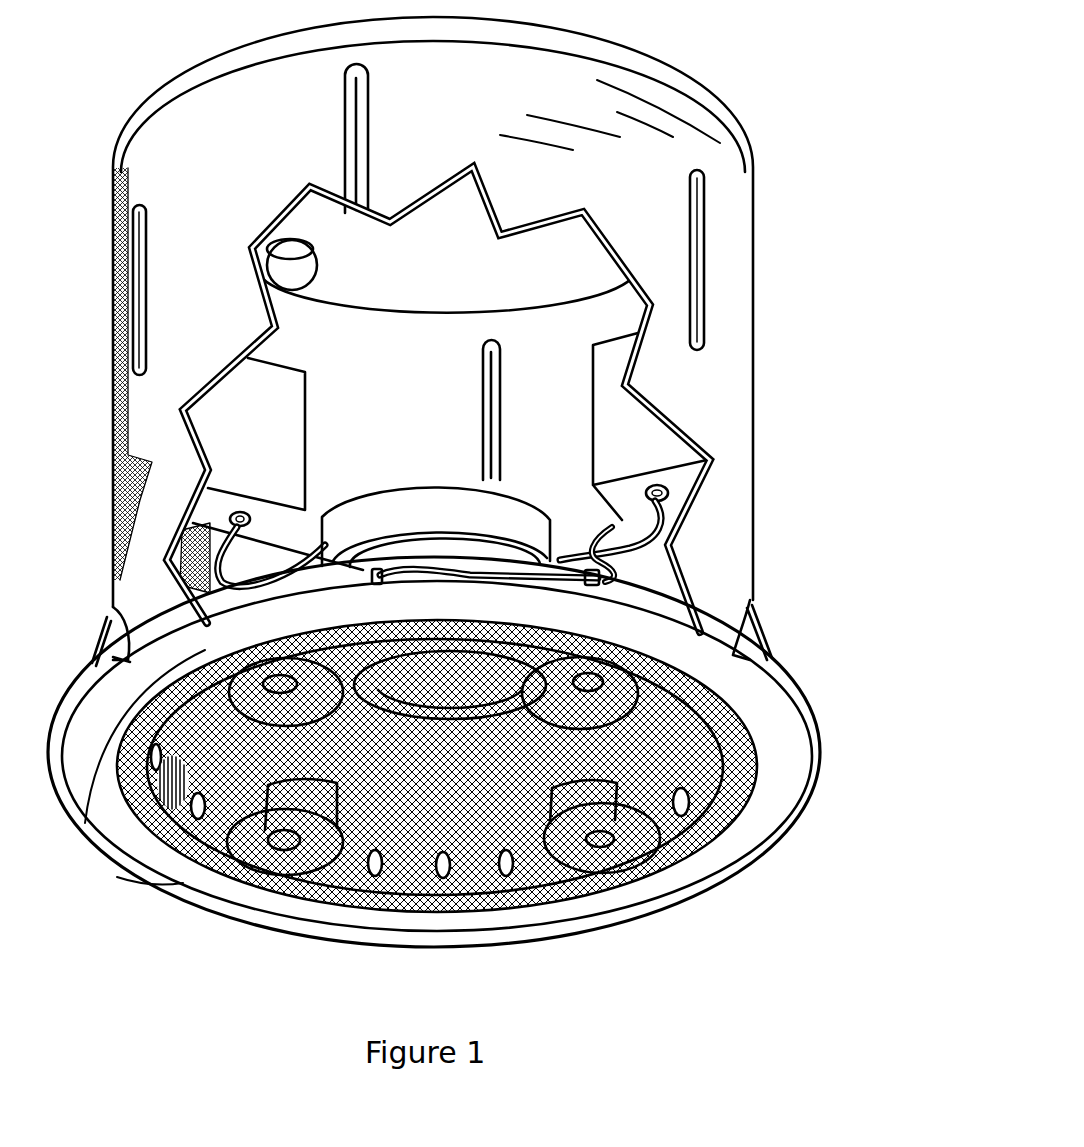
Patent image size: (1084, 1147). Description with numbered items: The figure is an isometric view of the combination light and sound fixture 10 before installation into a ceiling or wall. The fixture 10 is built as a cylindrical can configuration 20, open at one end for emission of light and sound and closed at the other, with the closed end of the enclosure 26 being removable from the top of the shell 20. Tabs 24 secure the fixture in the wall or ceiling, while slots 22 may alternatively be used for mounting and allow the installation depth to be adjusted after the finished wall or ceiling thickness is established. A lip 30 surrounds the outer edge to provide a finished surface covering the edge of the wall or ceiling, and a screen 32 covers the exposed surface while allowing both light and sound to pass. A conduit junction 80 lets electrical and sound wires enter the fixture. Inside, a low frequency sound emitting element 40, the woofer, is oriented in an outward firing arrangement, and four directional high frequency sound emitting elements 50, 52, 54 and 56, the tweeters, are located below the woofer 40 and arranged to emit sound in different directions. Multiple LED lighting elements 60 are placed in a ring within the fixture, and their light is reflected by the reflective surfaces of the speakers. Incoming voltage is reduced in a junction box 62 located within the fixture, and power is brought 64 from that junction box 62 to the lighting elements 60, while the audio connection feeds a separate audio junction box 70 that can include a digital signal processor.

The combination light and sound fixture 10 is at (739, 50).
The cylindrical can configuration 20 is at (471, 312).
The slots 22 is at (705, 284).
The tabs 24 is at (767, 633).
The closed end of the enclosure 26 is at (747, 140).
The lip 30 is at (743, 857).
The screen 32 is at (658, 863).
The low frequency sound emitting element 40 is at (363, 498).
The high frequency sound emitting element 50 is at (280, 868).
The high frequency sound emitting element 52 is at (605, 862).
The high frequency sound emitting element 54 is at (233, 693).
The high frequency sound emitting element 56 is at (627, 683).
The lighting elements 60 is at (508, 873).
The junction box 62 is at (652, 438).
The power connection 64 is at (663, 515).
The audio junction box 70 is at (230, 403).
The conduit junction 80 is at (268, 246).